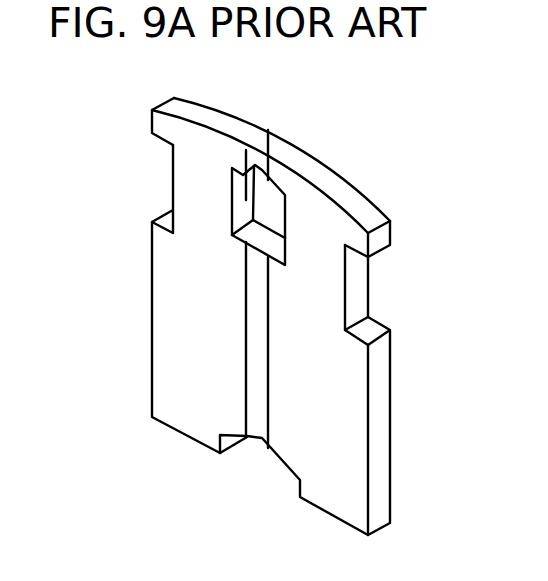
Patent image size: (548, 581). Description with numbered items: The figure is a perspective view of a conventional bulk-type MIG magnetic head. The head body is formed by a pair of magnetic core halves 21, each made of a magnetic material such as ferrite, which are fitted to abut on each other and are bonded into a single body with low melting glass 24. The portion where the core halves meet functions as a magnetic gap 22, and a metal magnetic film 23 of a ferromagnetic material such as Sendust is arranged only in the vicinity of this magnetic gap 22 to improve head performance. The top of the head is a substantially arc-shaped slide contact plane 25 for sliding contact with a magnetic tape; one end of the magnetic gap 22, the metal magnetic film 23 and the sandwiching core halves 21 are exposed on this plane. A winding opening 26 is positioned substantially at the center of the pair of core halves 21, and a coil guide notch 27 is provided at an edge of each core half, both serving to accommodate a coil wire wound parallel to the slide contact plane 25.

The magnetic core halves 21 is at (300, 477).
The magnetic gap 22 is at (268, 130).
The metal magnetic film 23 is at (248, 150).
The low melting glass 24 is at (275, 142).
The slide contact plane 25 is at (152, 108).
The winding opening 26 is at (263, 207).
The coil guide notch 27 is at (168, 157).